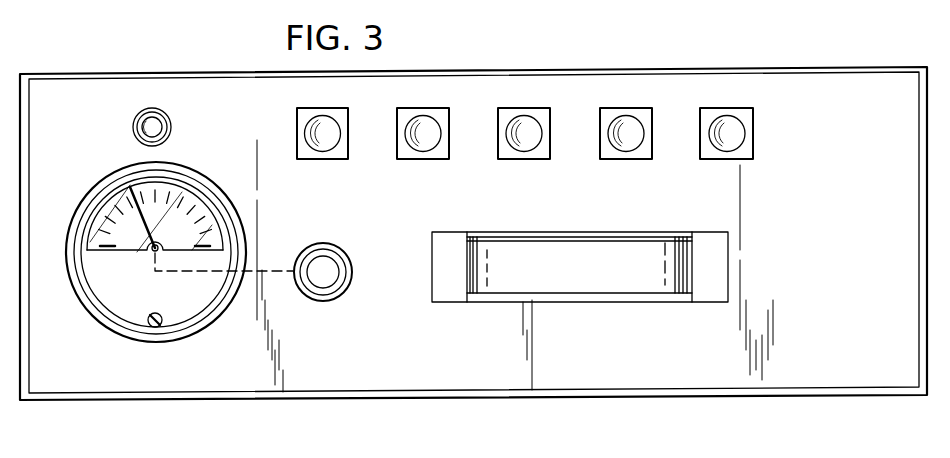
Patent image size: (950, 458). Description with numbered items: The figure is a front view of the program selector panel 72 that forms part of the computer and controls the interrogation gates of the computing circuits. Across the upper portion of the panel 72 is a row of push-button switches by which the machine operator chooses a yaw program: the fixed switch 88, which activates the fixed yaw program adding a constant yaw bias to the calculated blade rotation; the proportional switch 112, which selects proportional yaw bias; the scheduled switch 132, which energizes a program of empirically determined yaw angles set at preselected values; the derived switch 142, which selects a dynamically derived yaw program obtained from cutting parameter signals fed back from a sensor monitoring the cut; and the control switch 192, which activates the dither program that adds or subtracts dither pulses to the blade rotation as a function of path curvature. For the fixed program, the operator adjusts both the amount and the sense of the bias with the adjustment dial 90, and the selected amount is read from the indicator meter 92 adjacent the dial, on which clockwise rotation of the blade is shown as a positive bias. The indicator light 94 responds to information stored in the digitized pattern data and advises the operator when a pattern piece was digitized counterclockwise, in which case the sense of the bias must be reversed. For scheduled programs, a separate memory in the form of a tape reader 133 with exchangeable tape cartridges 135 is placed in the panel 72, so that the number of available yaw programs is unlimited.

The program selector panel 72 is at (600, 66).
The fixed switch 88 is at (316, 134).
The proportional switch 112 is at (413, 133).
The scheduled switch 132 is at (516, 133).
The derived switch 142 is at (618, 133).
The control switch 192 is at (734, 130).
The adjustment dial 90 is at (344, 290).
The indicator meter 92 is at (128, 326).
The indicator light 94 is at (171, 125).
The tape reader 133 is at (716, 232).
The tape cartridges 135 is at (612, 283).